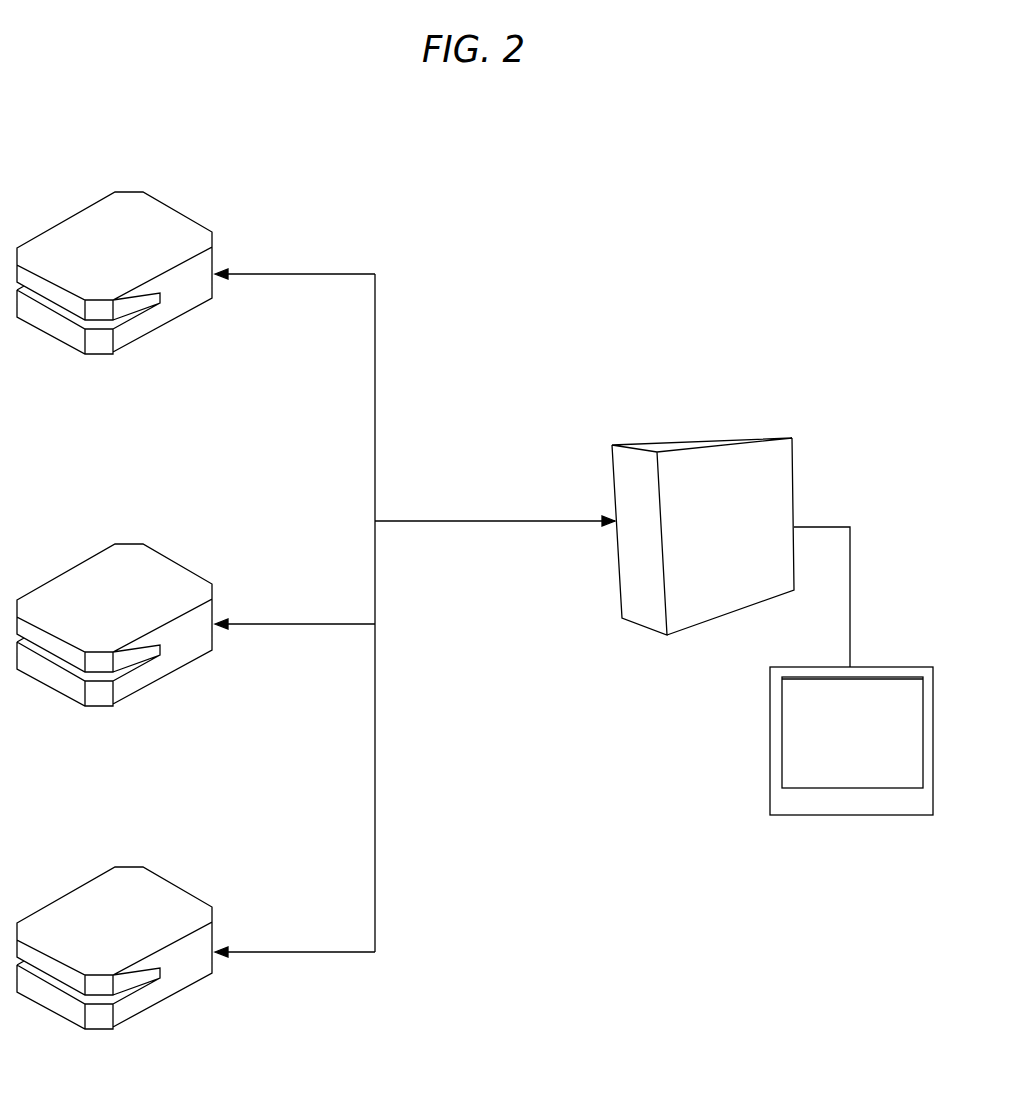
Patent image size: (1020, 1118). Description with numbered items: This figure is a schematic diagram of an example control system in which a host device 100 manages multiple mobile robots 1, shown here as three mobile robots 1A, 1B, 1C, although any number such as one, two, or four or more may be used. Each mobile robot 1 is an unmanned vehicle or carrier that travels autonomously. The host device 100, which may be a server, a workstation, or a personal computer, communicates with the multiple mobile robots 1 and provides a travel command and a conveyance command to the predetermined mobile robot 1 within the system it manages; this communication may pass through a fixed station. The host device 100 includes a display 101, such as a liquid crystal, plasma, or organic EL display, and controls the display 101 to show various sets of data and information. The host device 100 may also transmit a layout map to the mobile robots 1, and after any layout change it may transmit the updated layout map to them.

The mobile robot 1 is at (114, 562).
The mobile robot 1A is at (127, 187).
The mobile robot 1B is at (114, 577).
The mobile robot 1C is at (114, 901).
The host device 100 is at (708, 435).
The display 101 is at (903, 667).